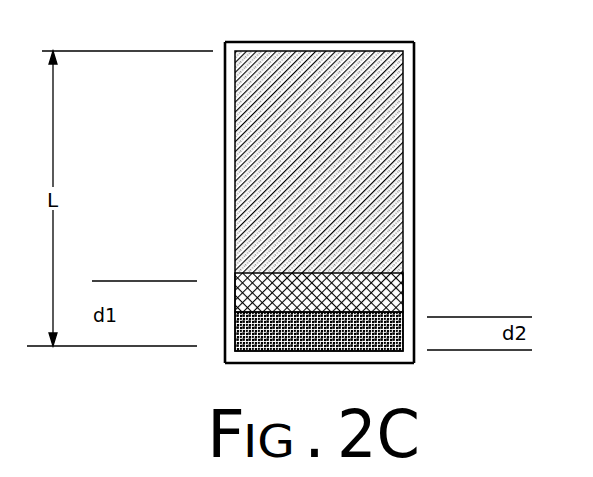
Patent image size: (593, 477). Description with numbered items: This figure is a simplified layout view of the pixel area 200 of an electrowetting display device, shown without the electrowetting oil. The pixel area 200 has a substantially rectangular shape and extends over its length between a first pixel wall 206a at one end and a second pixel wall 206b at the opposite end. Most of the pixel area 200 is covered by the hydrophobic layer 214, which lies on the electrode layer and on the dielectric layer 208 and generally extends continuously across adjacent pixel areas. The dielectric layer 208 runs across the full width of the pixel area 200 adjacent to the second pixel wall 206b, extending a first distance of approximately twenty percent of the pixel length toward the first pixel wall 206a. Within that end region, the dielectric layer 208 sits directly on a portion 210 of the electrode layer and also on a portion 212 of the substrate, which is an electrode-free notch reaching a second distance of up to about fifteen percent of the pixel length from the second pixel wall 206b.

The pixel area 200 is at (333, 205).
The first pixel wall 206a is at (352, 42).
The second pixel wall 206b is at (377, 363).
The dielectric layer 208 is at (306, 312).
The portion of the electrode layer 210 is at (415, 274).
The portion of the substrate 212 is at (415, 313).
The hydrophobic layer 214 is at (403, 86).